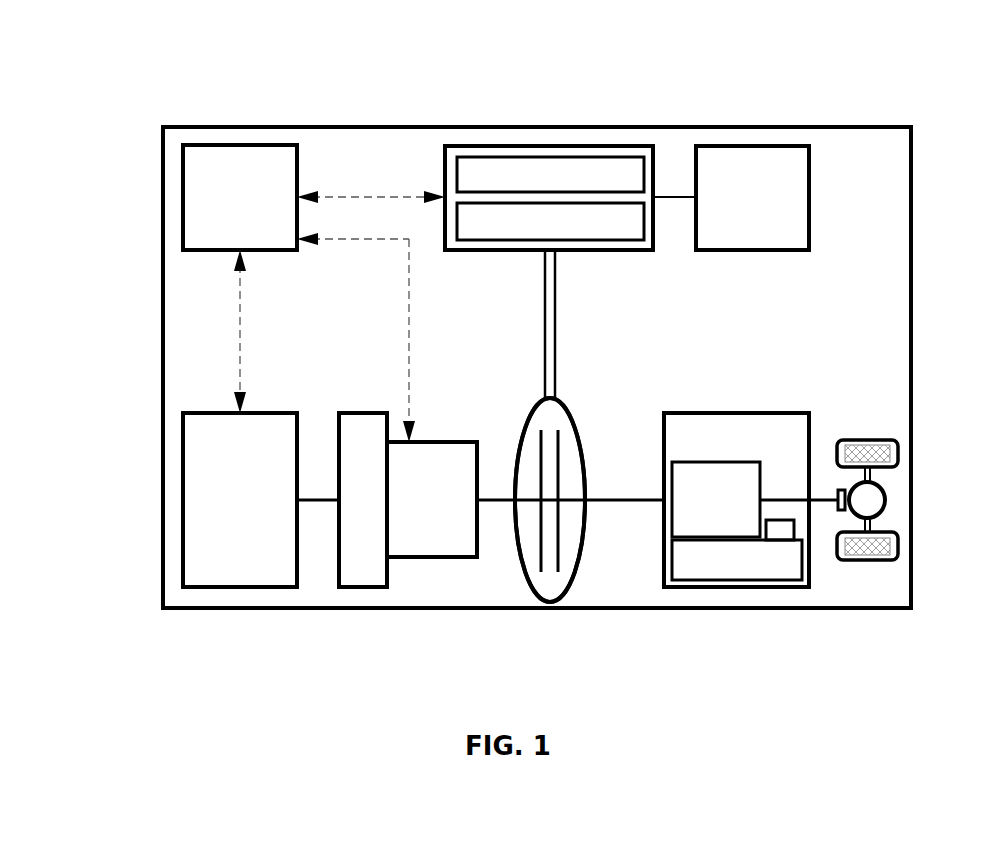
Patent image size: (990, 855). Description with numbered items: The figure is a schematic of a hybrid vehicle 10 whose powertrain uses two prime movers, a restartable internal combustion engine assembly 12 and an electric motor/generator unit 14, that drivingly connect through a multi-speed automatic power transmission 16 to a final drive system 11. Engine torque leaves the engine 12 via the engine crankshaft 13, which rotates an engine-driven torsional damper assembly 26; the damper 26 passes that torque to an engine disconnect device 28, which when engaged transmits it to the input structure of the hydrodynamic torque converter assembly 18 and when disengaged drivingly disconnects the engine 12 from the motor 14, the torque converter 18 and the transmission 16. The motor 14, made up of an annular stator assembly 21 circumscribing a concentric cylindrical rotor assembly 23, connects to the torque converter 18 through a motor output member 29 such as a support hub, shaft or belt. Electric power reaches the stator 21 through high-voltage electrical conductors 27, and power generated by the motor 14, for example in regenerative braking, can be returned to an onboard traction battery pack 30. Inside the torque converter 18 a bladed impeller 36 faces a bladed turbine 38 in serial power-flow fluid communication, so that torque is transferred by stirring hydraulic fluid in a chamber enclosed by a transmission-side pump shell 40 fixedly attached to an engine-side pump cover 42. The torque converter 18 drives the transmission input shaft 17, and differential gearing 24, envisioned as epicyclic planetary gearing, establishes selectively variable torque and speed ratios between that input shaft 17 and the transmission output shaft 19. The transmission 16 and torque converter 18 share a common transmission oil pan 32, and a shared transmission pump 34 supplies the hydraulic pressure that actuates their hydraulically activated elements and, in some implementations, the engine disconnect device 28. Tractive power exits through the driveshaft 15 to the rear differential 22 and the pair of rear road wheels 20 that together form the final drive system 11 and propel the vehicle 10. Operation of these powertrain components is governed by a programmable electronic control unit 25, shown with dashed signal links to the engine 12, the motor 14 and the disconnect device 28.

The hybrid vehicle 10 is at (148, 104).
The final drive system 11 is at (893, 312).
The internal combustion engine assembly 12 is at (197, 413).
The engine crankshaft 13 is at (317, 500).
The electric motor/generator unit 14 is at (516, 161).
The driveshaft 15 is at (826, 500).
The multi-speed automatic power transmission 16 is at (736, 502).
The transmission input shaft 17 is at (618, 500).
The torque converter assembly 18 is at (583, 555).
The transmission output shaft 19 is at (776, 500).
The rear road wheels 20 is at (863, 440).
The stator assembly 21 is at (457, 166).
The rear differential 22 is at (885, 497).
The rotor assembly 23 is at (457, 217).
The differential gearing 24 is at (717, 462).
The electronic control unit 25 is at (195, 145).
The torsional damper assembly 26 is at (377, 413).
The electrical conductors/cables 27 is at (667, 197).
The engine disconnect device 28 is at (445, 442).
The motor output member 29 is at (544, 280).
The traction battery pack 30 is at (724, 146).
The transmission oil pan 32 is at (713, 560).
The transmission pump 34 is at (778, 530).
The impeller 36 is at (541, 572).
The turbine 38 is at (558, 572).
The pump shell 40 is at (584, 530).
The pump cover 42 is at (519, 555).